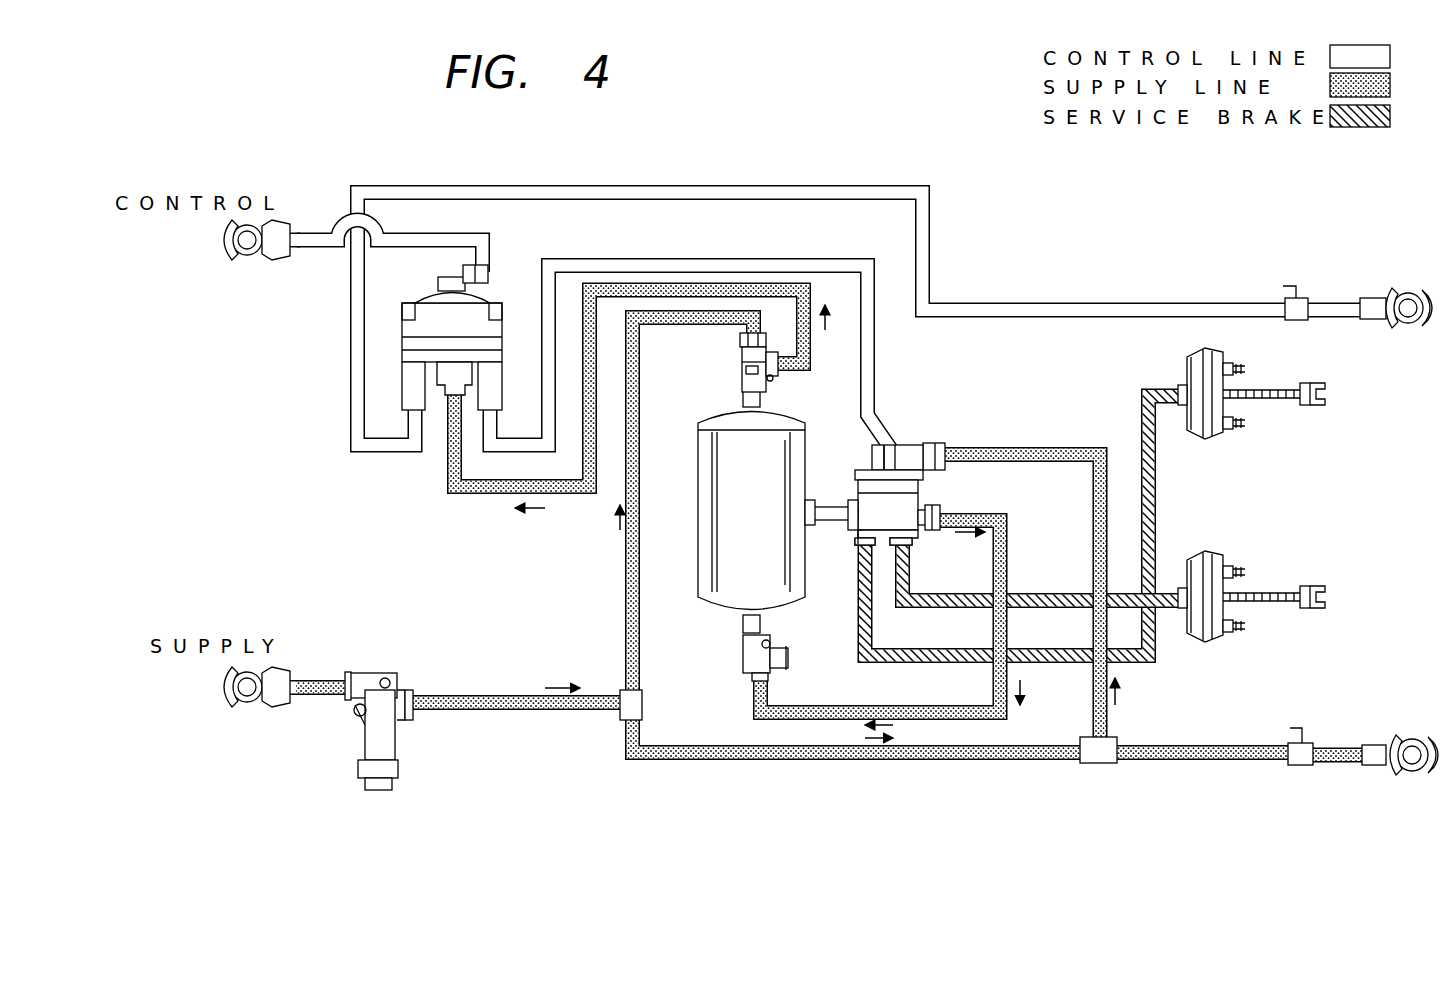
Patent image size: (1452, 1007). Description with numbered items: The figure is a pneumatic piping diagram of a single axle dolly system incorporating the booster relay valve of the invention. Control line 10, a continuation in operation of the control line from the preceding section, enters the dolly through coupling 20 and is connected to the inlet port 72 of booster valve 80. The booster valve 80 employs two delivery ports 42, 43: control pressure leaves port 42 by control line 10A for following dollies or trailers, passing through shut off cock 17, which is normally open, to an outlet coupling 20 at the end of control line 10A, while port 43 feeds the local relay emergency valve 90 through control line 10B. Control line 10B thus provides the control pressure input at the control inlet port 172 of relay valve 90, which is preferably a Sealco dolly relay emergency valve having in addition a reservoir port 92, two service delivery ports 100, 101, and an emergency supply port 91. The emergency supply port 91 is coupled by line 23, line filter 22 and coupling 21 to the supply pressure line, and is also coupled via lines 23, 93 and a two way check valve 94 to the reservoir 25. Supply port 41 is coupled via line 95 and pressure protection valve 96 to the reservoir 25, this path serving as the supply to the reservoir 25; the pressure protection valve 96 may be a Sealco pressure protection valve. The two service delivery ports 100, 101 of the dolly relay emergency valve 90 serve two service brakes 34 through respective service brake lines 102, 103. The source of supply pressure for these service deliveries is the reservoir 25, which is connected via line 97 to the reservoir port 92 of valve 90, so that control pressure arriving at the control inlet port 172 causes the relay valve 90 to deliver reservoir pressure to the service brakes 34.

The control line 10 is at (315, 250).
The control line 10A is at (650, 185).
The control line 10B is at (680, 258).
The shut off cock 17 is at (1300, 298).
The coupling 20 is at (247, 242).
The coupling 21 is at (248, 690).
The line filter 22 is at (380, 745).
The line 23 is at (462, 700).
The reservoir 25 is at (735, 495).
The service brakes 34 is at (1215, 437).
The supply port 41 is at (917, 508).
The delivery port 42 is at (405, 392).
The delivery port 43 is at (500, 378).
The inlet port 72 is at (486, 268).
The booster valve 80 is at (440, 330).
The relay emergency valve 90 is at (880, 475).
The emergency supply port 91 is at (940, 450).
The reservoir port 92 is at (845, 535).
The line 93 is at (625, 582).
The two way check valve 94 is at (742, 360).
The line 95 is at (1008, 528).
The pressure protection valve 96 is at (743, 650).
The line 97 is at (845, 505).
The service delivery port 100 is at (905, 535).
The service delivery port 101 is at (878, 548).
The service brake line 102 is at (1053, 585).
The service brake line 103 is at (1140, 410).
The control inlet port 172 is at (903, 468).